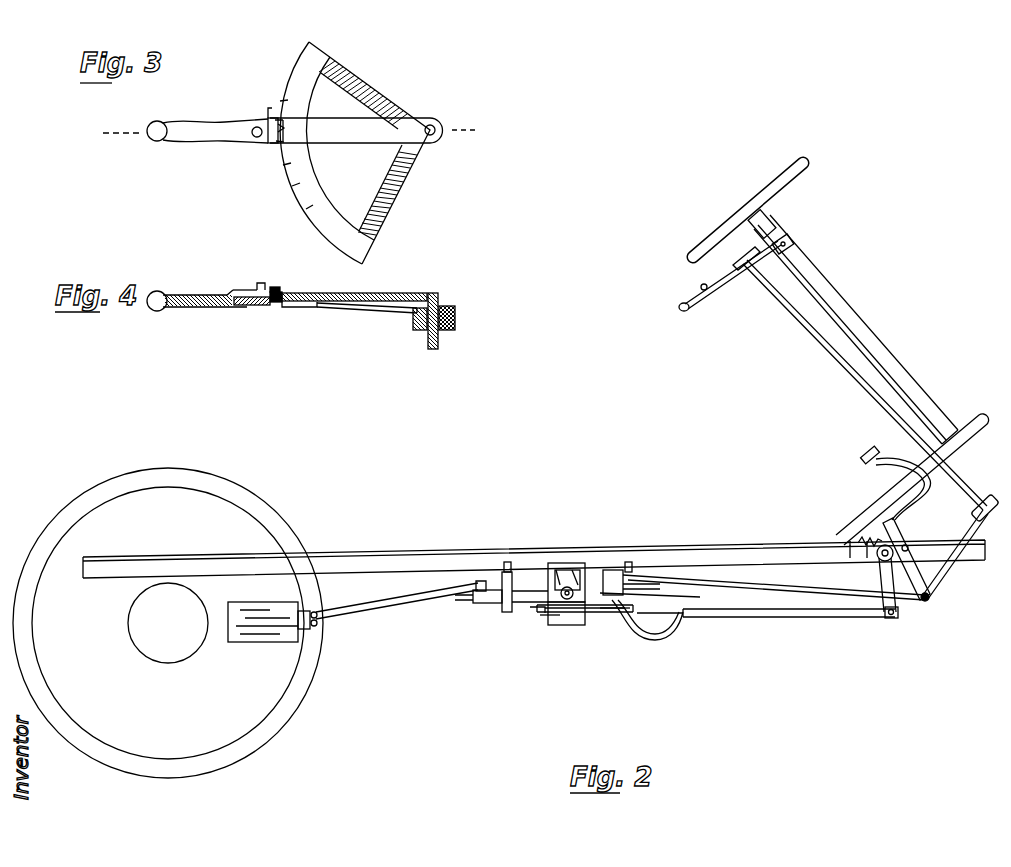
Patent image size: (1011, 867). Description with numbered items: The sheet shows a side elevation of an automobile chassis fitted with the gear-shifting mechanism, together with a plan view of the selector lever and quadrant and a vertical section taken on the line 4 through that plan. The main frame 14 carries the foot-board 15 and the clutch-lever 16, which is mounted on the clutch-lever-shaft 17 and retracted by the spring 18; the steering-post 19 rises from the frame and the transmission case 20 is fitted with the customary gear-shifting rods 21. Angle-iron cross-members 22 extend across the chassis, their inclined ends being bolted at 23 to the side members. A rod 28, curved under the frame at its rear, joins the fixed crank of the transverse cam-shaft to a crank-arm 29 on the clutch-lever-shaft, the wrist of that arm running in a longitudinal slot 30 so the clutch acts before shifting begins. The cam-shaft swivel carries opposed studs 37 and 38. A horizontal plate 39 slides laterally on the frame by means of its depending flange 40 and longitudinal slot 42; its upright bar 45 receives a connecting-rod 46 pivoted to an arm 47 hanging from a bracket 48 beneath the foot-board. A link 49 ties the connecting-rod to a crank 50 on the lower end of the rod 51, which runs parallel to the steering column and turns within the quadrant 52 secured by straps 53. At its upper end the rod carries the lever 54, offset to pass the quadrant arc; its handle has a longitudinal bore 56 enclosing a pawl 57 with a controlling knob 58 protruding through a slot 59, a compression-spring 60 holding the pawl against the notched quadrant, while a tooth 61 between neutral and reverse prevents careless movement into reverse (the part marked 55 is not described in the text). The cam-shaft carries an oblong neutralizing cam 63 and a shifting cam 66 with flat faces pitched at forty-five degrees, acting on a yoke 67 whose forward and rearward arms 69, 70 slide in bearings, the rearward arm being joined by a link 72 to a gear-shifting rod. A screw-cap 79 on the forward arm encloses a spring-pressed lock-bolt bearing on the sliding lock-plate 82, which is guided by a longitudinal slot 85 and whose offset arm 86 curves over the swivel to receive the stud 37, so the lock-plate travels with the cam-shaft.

In FIG. 3, the section line 4— 4 is at (472, 128).
In FIG. 2, the main frame 14 is at (414, 563).
In FIG. 2, the foot-board 15 is at (893, 494).
In FIG. 2, the clutch-lever 16 is at (866, 459).
In FIG. 2, the clutch-lever-shaft 17 is at (877, 559).
In FIG. 2, the spring 18 is at (865, 538).
In FIG. 2, the steering-post 19 is at (836, 311).
In FIG. 2, the transmission case 20 is at (275, 642).
In FIG. 2, the gear-shifting rods 21 is at (317, 611).
In FIG. 2, the angle-iron cross-members 22 is at (505, 572).
In FIG. 2, the bolts 23 is at (509, 562).
In FIG. 2, the rod 28 is at (812, 614).
In FIG. 2, the crank-arm 29 is at (885, 580).
In FIG. 2, the longitudinal slot 30 is at (898, 618).
In FIG. 2, the stud 37 is at (548, 580).
In FIG. 2, the stud 38 is at (560, 625).
In FIG. 2, the horizontal plate 39 is at (535, 610).
In FIG. 2, the depending flange 40 is at (545, 616).
In FIG. 2, the longitudinal slot 42 is at (553, 620).
In FIG. 2, the upright bar 45 is at (609, 570).
In FIG. 2, the connecting-rod 46 is at (740, 582).
In FIG. 2, the arm 47 is at (929, 598).
In FIG. 2, the bracket 48 is at (900, 536).
In FIG. 2, the link 49 is at (951, 570).
In FIG. 2, the crank 50 is at (984, 501).
In FIG. 3, the rod 51 is at (440, 135).
In FIG. 4, the rod 51 is at (440, 340).
In FIG. 2, the rod 51 is at (822, 340).
In FIG. 3, the quadrant 52 is at (352, 153).
In FIG. 4, the quadrant 52 is at (304, 292).
In FIG. 2, the quadrant 52 is at (736, 270).
In FIG. 2, the straps 53 is at (792, 241).
In FIG. 3, the lever 54 is at (356, 130).
In FIG. 4, the lever 54 is at (355, 308).
In FIG. 2, the lever 54 is at (712, 297).
In FIG. 3, the spring 55 is at (298, 122).
In FIG. 4, the spring 55 is at (312, 306).
In FIG. 4, the longitudinal bore 56 is at (250, 308).
In FIG. 3, the pawl 57 is at (274, 146).
In FIG. 4, the pawl 57 is at (274, 287).
In FIG. 3, the controlling knob 58 is at (252, 140).
In FIG. 4, the controlling knob 58 is at (258, 282).
In FIG. 2, the controlling knob 58 is at (700, 288).
In FIG. 3, the slot 59 is at (240, 137).
In FIG. 4, the slot 59 is at (240, 290).
In FIG. 4, the compression-spring 60 is at (232, 292).
In FIG. 3, the tooth 61 is at (270, 117).
In FIG. 2, the oblong cam 63 is at (571, 588).
In FIG. 2, the shifting cam 66 is at (570, 572).
In FIG. 2, the yoke 67 is at (555, 572).
In FIG. 2, the arm 69 is at (701, 598).
In FIG. 2, the arm 70 is at (488, 601).
In FIG. 2, the link 72 is at (401, 596).
In FIG. 2, the screw-cap 79 is at (661, 587).
In FIG. 2, the sliding lock-plate 82 is at (657, 636).
In FIG. 2, the longitudinal slot 85 is at (630, 615).
In FIG. 2, the arm 86 is at (590, 612).